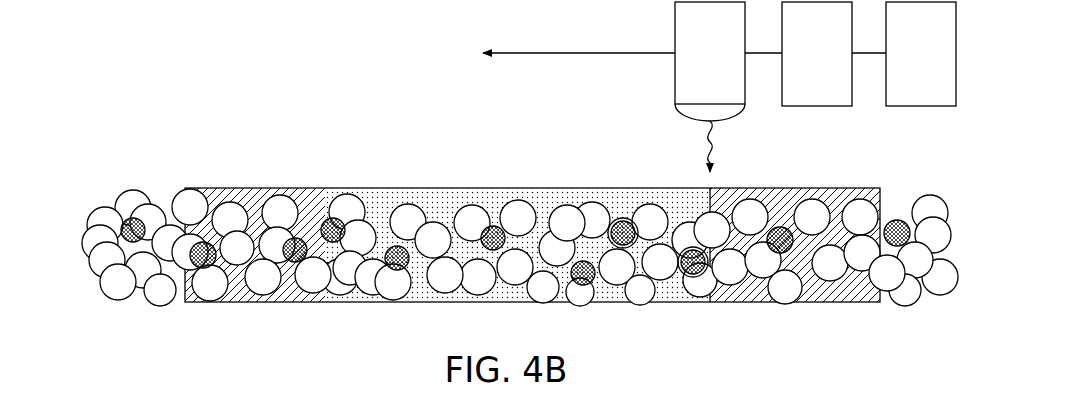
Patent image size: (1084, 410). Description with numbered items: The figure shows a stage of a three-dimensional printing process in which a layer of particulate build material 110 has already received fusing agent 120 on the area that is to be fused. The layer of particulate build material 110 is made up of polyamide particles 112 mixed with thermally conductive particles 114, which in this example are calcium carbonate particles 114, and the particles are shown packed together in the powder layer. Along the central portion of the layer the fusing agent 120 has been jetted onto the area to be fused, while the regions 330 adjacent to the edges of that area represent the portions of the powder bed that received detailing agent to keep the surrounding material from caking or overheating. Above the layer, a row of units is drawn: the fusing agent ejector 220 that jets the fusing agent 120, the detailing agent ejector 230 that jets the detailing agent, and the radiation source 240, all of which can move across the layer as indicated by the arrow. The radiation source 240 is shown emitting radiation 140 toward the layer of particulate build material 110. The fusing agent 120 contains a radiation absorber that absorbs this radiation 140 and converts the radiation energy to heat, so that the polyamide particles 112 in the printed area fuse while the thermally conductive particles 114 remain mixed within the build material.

The particulate build material 110 is at (560, 200).
The polyamide particles 112 is at (100, 225).
The thermally conductive particles 114 is at (125, 220).
The fusing agent 120 is at (428, 210).
The matrix material 330 is at (309, 200).
The radiation 140 is at (715, 176).
The fusing agent ejector 220 is at (903, 64).
The detailing agent ejector 230 is at (799, 64).
The radiation source 240 is at (692, 64).